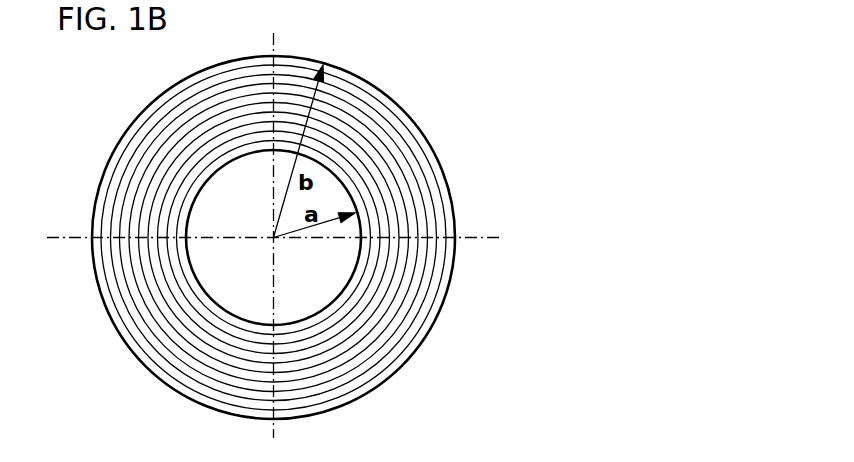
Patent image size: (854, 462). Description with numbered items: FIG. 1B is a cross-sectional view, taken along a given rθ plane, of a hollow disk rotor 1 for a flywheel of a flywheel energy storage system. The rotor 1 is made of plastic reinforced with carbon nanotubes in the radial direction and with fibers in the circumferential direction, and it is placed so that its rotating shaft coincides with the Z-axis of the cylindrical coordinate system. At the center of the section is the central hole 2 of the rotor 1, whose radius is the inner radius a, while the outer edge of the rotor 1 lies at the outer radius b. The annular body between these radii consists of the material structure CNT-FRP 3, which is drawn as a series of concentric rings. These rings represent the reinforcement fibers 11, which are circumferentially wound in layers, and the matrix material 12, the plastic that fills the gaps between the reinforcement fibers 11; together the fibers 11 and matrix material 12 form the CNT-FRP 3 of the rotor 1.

The hollow disk rotor 1 is at (115, 147).
The central hole 2 is at (213, 218).
The CNT-FRP 3 is at (321, 237).
The reinforcement fibers 11 is at (363, 122).
The matrix material 12 is at (385, 162).